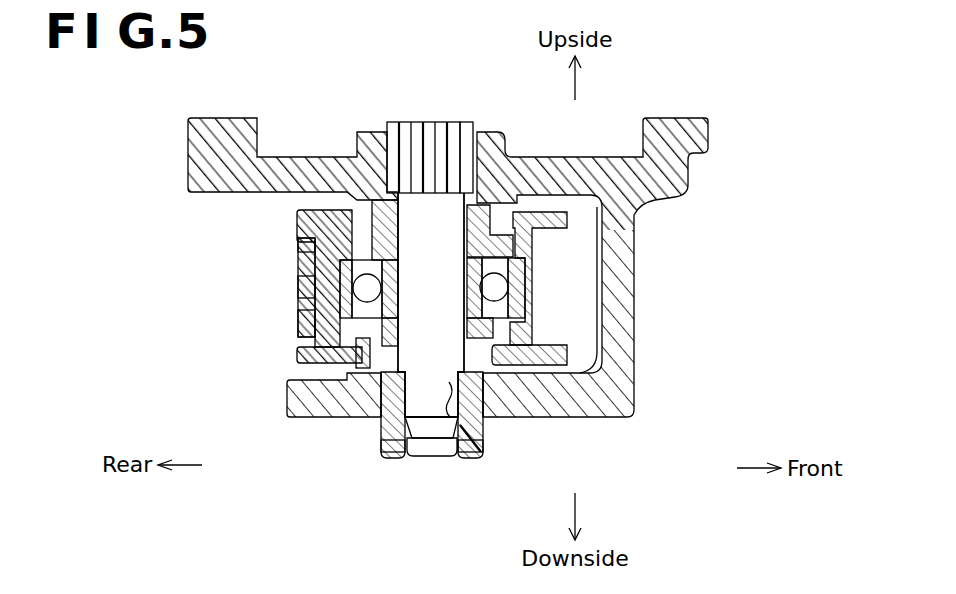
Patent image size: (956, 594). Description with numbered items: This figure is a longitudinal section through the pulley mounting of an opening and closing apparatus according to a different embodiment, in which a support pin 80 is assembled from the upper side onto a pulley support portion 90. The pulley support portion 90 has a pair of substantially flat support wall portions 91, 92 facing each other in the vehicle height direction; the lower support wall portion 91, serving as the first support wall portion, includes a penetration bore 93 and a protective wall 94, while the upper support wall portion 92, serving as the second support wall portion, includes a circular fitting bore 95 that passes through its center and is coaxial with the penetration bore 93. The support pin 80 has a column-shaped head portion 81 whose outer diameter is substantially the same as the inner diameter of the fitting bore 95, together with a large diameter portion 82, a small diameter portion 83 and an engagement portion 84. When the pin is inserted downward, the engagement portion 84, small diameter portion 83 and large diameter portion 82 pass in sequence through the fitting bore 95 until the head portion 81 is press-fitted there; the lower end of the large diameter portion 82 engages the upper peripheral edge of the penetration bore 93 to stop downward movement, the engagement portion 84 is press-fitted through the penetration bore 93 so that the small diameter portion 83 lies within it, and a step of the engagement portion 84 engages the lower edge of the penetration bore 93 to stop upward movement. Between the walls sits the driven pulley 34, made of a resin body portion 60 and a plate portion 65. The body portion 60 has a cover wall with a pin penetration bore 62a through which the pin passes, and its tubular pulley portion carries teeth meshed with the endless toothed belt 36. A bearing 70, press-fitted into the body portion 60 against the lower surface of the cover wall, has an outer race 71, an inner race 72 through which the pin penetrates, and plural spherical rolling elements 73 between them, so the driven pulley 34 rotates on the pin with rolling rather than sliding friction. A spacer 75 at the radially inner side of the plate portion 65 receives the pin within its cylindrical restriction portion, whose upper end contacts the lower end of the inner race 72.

The driven pulley 34 is at (519, 311).
The endless toothed belt 36 is at (275, 286).
The body portion 60 is at (533, 315).
The pin penetration bore 62a is at (480, 227).
The plate portion 65 is at (533, 345).
The bearing 70 is at (533, 290).
The outer race 71 is at (298, 241).
The inner race 72 is at (337, 317).
The rolling elements 73 is at (352, 287).
The spacer 75 is at (490, 385).
The support pin 80 is at (396, 121).
The head portion 81 is at (430, 295).
The large diameter portion 82 is at (364, 449).
The small diameter portion 83 is at (392, 450).
The engagement portion 84 is at (428, 450).
The pulley support portion 90 is at (448, 277).
The support wall portion 91 is at (578, 418).
The support wall portion 92 is at (561, 160).
The penetration bore 93 is at (487, 440).
The protective wall 94 is at (471, 458).
The fitting bore 95 is at (465, 128).